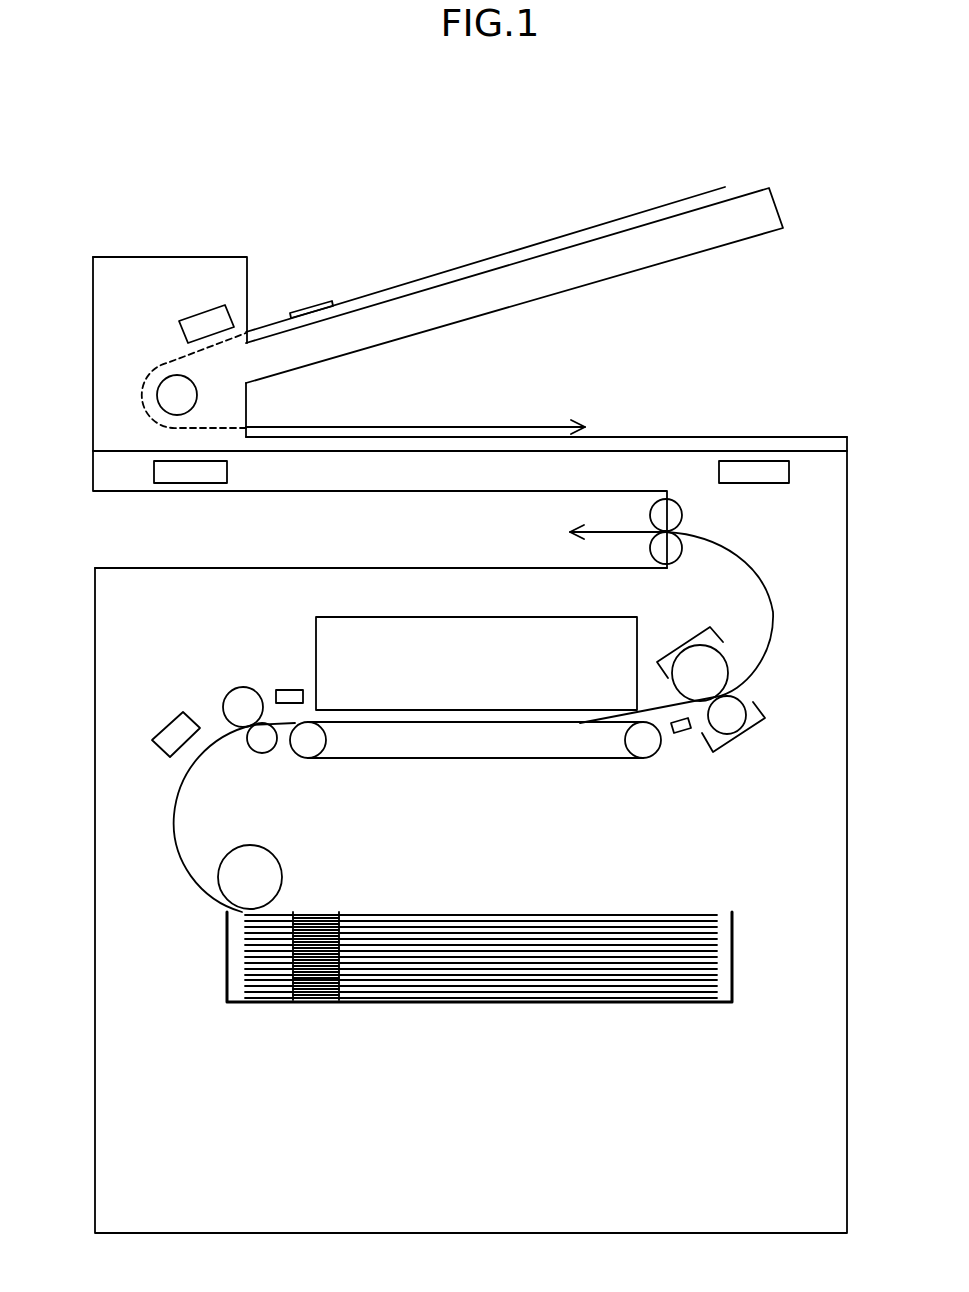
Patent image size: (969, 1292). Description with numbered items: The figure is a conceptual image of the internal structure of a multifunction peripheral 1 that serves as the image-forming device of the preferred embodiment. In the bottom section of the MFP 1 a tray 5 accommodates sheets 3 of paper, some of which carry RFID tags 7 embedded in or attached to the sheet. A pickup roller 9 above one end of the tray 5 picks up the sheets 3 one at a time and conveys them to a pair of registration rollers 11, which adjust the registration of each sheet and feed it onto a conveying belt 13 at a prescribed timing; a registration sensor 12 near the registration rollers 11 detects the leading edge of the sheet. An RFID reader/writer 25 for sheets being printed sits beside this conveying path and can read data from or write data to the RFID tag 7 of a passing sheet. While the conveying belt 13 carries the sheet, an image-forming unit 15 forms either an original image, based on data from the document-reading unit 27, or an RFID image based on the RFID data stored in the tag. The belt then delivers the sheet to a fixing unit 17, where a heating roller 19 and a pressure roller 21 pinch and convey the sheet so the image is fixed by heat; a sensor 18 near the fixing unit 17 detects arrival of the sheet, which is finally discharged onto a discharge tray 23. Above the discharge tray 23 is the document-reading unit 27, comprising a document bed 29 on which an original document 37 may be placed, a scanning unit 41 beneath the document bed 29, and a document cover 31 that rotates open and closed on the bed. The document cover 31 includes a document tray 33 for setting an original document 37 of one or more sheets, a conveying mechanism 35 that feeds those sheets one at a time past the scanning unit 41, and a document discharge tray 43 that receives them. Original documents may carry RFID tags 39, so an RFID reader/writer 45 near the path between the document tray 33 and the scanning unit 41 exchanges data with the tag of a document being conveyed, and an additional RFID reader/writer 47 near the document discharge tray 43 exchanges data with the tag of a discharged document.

The multifunction peripheral 1 is at (413, 203).
The sheets 3 is at (500, 912).
The tray 5 is at (733, 955).
The RFID tag 7 is at (320, 912).
The pickup roller 9 is at (250, 863).
The registration rollers 11 is at (255, 743).
The registration sensor 12 is at (292, 690).
The conveying belt 13 is at (490, 750).
The image-forming unit 15 is at (482, 628).
The fixing unit 17 is at (705, 760).
The sensor 18 is at (676, 737).
The heating roller 19 is at (708, 672).
The pressure roller 21 is at (730, 712).
The discharge tray 23 is at (396, 567).
The RFID reader/writer 25 is at (173, 733).
The document-reading unit 27 is at (209, 227).
The document bed 29 is at (677, 450).
The document cover 31 is at (123, 290).
The document tray 33 is at (740, 197).
The conveying mechanism 35 is at (175, 394).
The original document 37 is at (543, 240).
The RFID tag 39 is at (308, 300).
The scanning unit 41 is at (190, 475).
The document discharge tray 43 is at (625, 437).
The RFID reader/writer 45 is at (204, 323).
The RFID reader/writer 47 is at (755, 477).